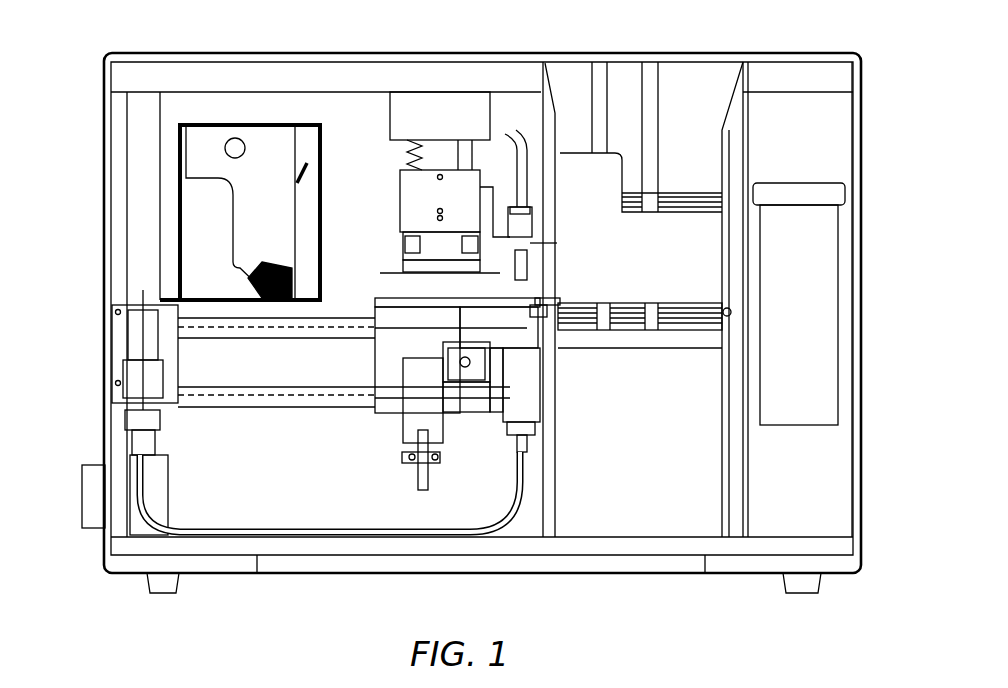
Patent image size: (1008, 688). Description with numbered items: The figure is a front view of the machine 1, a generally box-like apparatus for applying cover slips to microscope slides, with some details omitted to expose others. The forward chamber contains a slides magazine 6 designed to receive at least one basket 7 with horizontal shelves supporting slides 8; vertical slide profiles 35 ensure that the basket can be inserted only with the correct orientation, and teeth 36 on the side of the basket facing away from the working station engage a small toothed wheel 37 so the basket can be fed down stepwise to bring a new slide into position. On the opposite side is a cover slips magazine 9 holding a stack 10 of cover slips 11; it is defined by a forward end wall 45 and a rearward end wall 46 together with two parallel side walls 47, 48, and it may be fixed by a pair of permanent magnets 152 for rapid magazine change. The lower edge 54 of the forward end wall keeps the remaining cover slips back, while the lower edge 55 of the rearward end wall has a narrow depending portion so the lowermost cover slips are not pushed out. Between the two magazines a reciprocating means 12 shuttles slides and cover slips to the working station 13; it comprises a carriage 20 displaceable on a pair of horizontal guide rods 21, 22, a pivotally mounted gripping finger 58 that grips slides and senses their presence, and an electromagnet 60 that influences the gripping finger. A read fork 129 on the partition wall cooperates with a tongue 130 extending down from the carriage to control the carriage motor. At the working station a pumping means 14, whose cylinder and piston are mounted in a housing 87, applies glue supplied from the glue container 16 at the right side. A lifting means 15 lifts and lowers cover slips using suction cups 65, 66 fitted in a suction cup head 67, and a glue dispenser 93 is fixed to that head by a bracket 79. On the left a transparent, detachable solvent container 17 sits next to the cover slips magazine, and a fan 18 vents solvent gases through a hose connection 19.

The machine 1 is at (716, 52).
The slides magazine 6 is at (622, 98).
The basket 7 is at (652, 325).
The slide 8 is at (580, 328).
The cover slips magazine 9 is at (279, 158).
The stack of cover slips 10 is at (281, 263).
The cover slip 11 is at (392, 272).
The reciprocating means 12 is at (374, 363).
The working station 13 is at (462, 298).
The pumping means 14 is at (502, 425).
The lifting means 15 is at (396, 196).
The glue container 16 is at (830, 355).
The solvent container 17 is at (133, 343).
The fan 18 is at (160, 478).
The hose connection 19 is at (93, 520).
The carriage 20 is at (412, 427).
The guide rod 21 is at (244, 332).
The guide rod 22 is at (255, 408).
The vertical slide profiles 35 is at (600, 128).
The teeth 36 is at (722, 326).
The toothed wheel 37 is at (731, 306).
The forward end wall 45 is at (300, 190).
The rearward end wall 46 is at (178, 212).
The side wall 47 is at (208, 137).
The side wall 48 is at (197, 265).
The lower edge 54 is at (305, 299).
The lower edge 55 is at (178, 300).
The gripping finger 58 is at (565, 303).
The electromagnet 60 is at (470, 376).
The suction cup 65 is at (405, 242).
The suction cup 66 is at (470, 262).
The suction cup head 67 is at (470, 186).
The bracket 79 is at (523, 245).
The housing 87 is at (535, 400).
The glue dispenser 93 is at (525, 224).
The read fork 129 is at (420, 481).
The tongue 130 is at (410, 456).
The permanent magnet 152 is at (240, 140).